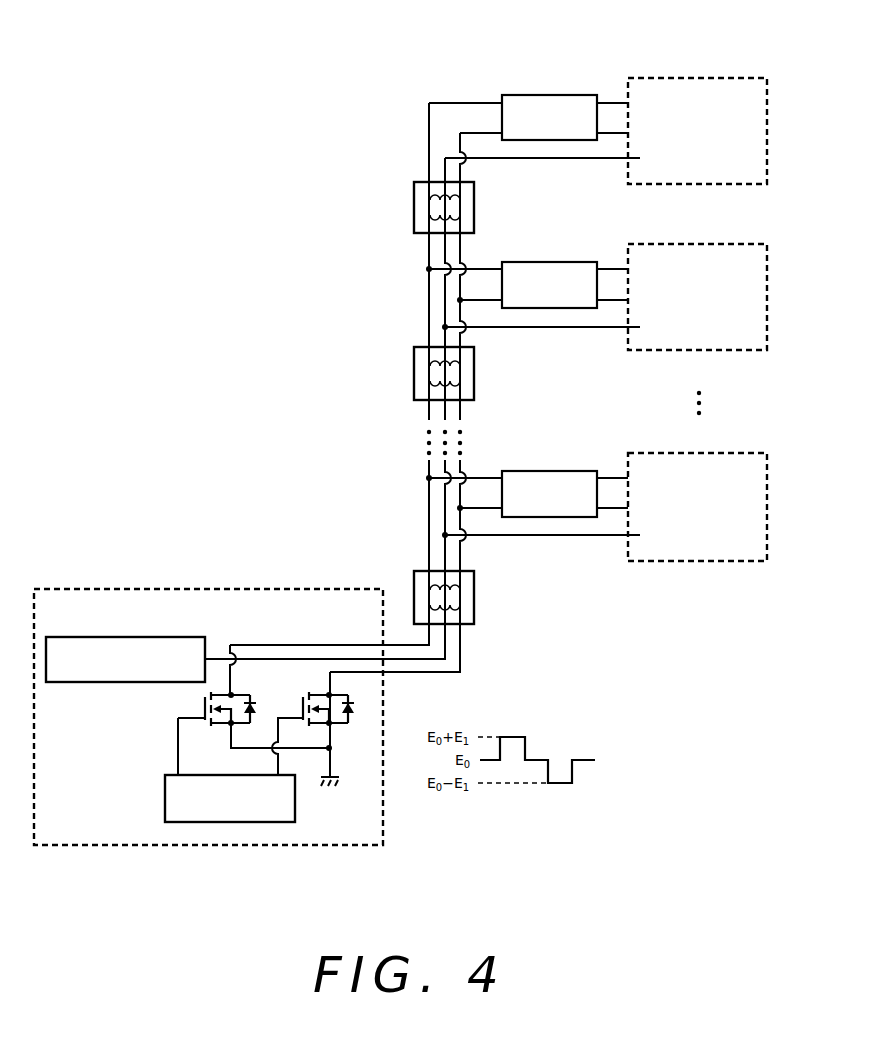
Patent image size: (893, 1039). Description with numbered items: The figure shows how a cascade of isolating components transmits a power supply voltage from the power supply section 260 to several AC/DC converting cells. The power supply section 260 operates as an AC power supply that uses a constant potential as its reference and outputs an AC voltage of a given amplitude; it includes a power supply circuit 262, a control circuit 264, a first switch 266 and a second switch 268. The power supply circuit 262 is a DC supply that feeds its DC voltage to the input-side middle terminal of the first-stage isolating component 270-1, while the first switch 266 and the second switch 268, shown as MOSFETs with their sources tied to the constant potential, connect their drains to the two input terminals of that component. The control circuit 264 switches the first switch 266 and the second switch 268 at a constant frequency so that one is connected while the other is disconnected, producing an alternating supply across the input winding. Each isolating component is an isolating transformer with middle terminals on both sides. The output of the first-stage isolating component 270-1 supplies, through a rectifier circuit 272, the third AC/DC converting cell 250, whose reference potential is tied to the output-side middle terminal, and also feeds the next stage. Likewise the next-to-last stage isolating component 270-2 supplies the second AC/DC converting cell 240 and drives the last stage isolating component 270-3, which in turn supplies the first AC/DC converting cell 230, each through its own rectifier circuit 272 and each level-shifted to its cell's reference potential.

The first AC/DC converting cell 230 is at (700, 78).
The second AC/DC converting cell 240 is at (700, 244).
The third AC/DC converting cell 250 is at (700, 453).
The power supply section 260 is at (211, 589).
The power supply circuit 262 is at (126, 637).
The control circuit 264 is at (165, 799).
The first switch 266 is at (202, 708).
The second switch 268 is at (304, 695).
The first-stage isolating component 270-1 is at (474, 600).
The (m-1)-th stage isolating component 270-2 is at (474, 373).
The m-th stage isolating component 270-3 is at (474, 208).
The rectifier circuit 272 is at (552, 95).